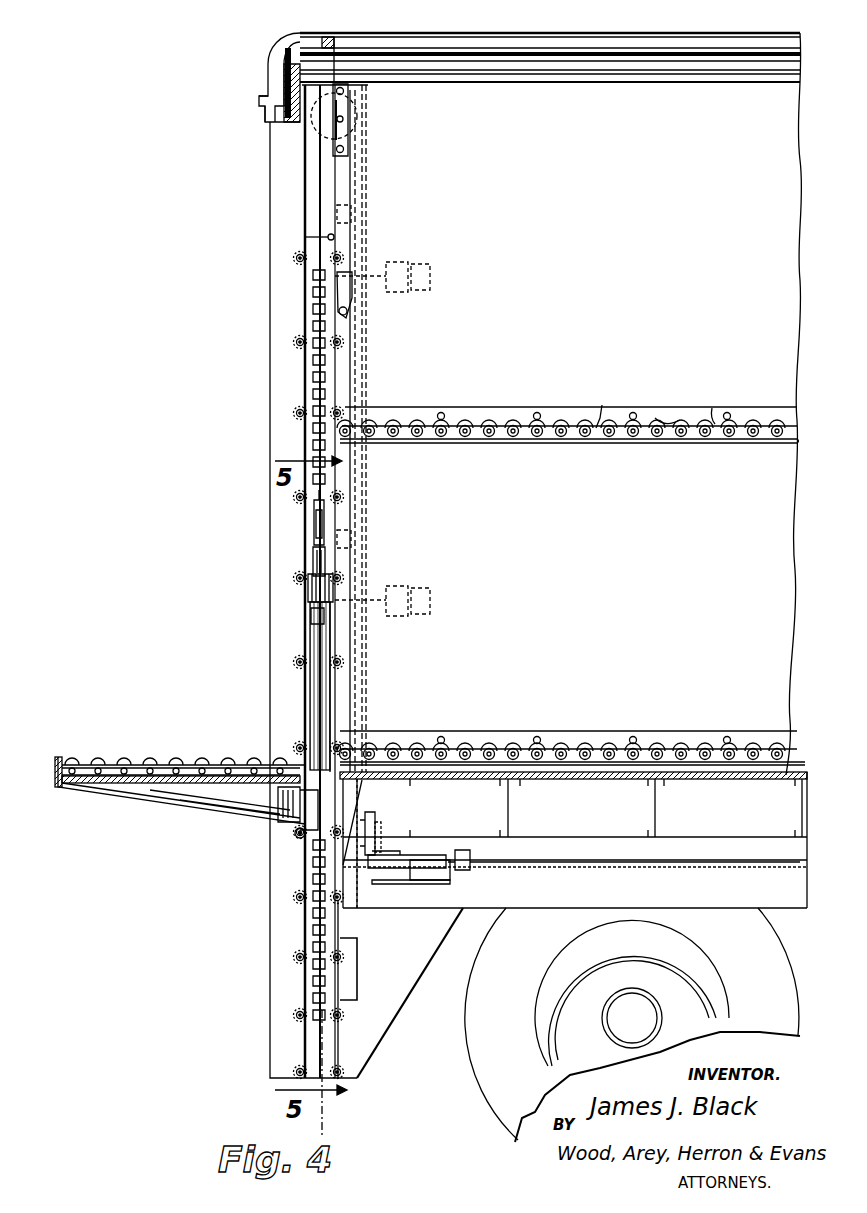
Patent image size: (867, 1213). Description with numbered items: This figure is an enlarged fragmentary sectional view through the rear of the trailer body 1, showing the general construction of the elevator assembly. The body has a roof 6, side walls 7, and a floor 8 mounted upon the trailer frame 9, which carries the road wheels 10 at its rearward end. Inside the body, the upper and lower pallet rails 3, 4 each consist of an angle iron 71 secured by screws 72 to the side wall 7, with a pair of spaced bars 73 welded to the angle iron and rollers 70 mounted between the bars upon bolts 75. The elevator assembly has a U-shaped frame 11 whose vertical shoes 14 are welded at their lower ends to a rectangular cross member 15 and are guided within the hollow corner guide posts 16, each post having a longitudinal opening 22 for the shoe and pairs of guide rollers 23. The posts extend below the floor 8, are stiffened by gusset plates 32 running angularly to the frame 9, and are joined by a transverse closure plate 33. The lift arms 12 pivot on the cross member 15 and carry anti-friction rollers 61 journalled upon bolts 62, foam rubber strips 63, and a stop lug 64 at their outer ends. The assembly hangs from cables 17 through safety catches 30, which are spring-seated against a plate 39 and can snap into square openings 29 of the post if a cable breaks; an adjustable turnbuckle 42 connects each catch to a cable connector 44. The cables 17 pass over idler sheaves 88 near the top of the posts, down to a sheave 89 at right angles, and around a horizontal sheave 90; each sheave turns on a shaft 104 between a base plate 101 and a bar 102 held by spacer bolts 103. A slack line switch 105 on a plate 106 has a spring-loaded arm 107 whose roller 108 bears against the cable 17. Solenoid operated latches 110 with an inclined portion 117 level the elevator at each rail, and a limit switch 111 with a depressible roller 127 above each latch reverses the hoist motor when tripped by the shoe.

The trailer body 1 is at (278, 56).
The upper pallet rails 3 is at (568, 412).
The lower pallet rails 4 is at (420, 744).
The roof 6 is at (796, 33).
The side walls 7 is at (790, 272).
The floor 8 is at (750, 776).
The trailer frame 9 is at (790, 886).
The road wheels 10 is at (772, 968).
The U-shaped frame 11 is at (318, 740).
The outriggers or lift arms 12 is at (198, 807).
The vertical shoes 14 is at (312, 618).
The cross member 15 is at (296, 836).
The corner guide posts 16 is at (300, 540).
The cables 17 is at (320, 212).
The longitudinal opening 22 is at (333, 704).
The guide rollers 23 is at (352, 962).
The square openings 29 is at (313, 368).
The safety catches 30 is at (308, 598).
The gusset plates 32 is at (435, 1008).
The transverse closure plate 33 is at (338, 1048).
The plate 39 is at (311, 623).
The adjustable turnbuckle 42 is at (313, 558).
The cable connector 44 is at (314, 516).
The anti-friction rollers 61 is at (105, 762).
The bolts 62 is at (160, 766).
The strips 63 is at (232, 776).
The stop element or lug 64 is at (60, 760).
The rollers 70 is at (660, 418).
The angle iron 71 is at (474, 418).
The screws 72 is at (540, 416).
The spaced bars 73 is at (601, 408).
The bolts 75 is at (717, 405).
The idler sheaves 88 is at (358, 108).
The sheave 89 is at (372, 818).
The sheave 90 is at (428, 848).
The base plate 101 is at (330, 118).
The bar 102 is at (334, 136).
The spacer bolts 103 is at (345, 91).
The shaft 104 is at (344, 121).
The slack line switch 105 is at (438, 862).
The plate 106 is at (420, 884).
The arm 107 is at (463, 850).
The roller 108 is at (478, 860).
The solenoid operated latches 110 is at (394, 268).
The limit switch 111 is at (346, 215).
The inclined portion 117 is at (336, 280).
The depressible roller 127 is at (305, 240).